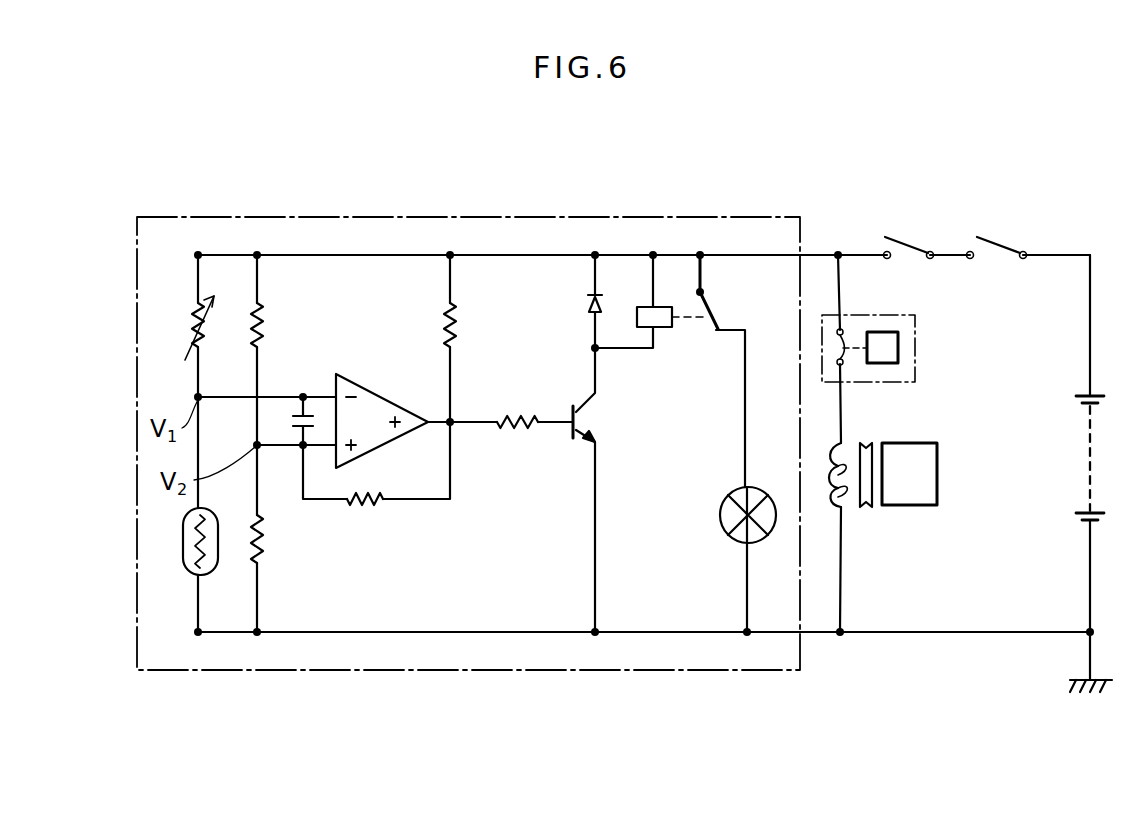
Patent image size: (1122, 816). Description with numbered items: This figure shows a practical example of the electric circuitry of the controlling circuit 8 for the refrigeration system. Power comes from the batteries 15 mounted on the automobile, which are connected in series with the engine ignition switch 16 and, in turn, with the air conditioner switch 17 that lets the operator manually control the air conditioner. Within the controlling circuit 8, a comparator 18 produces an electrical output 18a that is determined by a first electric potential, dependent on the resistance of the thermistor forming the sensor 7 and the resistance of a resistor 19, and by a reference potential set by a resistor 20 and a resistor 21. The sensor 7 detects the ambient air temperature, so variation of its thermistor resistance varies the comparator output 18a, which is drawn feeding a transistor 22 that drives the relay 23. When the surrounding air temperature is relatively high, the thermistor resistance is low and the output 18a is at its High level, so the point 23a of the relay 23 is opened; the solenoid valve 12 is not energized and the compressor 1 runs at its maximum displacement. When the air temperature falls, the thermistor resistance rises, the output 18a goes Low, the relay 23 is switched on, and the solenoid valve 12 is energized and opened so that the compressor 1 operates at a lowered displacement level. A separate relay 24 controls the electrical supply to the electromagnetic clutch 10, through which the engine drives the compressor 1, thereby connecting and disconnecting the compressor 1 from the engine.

The compressor 1 is at (925, 472).
The sensor 7 is at (190, 565).
The controlling circuit 8 is at (503, 230).
The electromagnetic clutch 10 is at (862, 497).
The solenoid-operated pilot valve 12 is at (723, 513).
The batteries 15 is at (1088, 447).
The engine ignition switch 16 is at (1003, 240).
The air conditioner switch 17 is at (902, 242).
The comparator 18 is at (370, 412).
The electrical output 18a is at (432, 418).
The resistor 19 is at (195, 315).
The resistor 20 is at (263, 330).
The resistor 21 is at (265, 548).
The transistor 22 is at (585, 395).
The relay 23 is at (657, 310).
The point of the relay 23a is at (708, 312).
The relay 24 is at (907, 368).